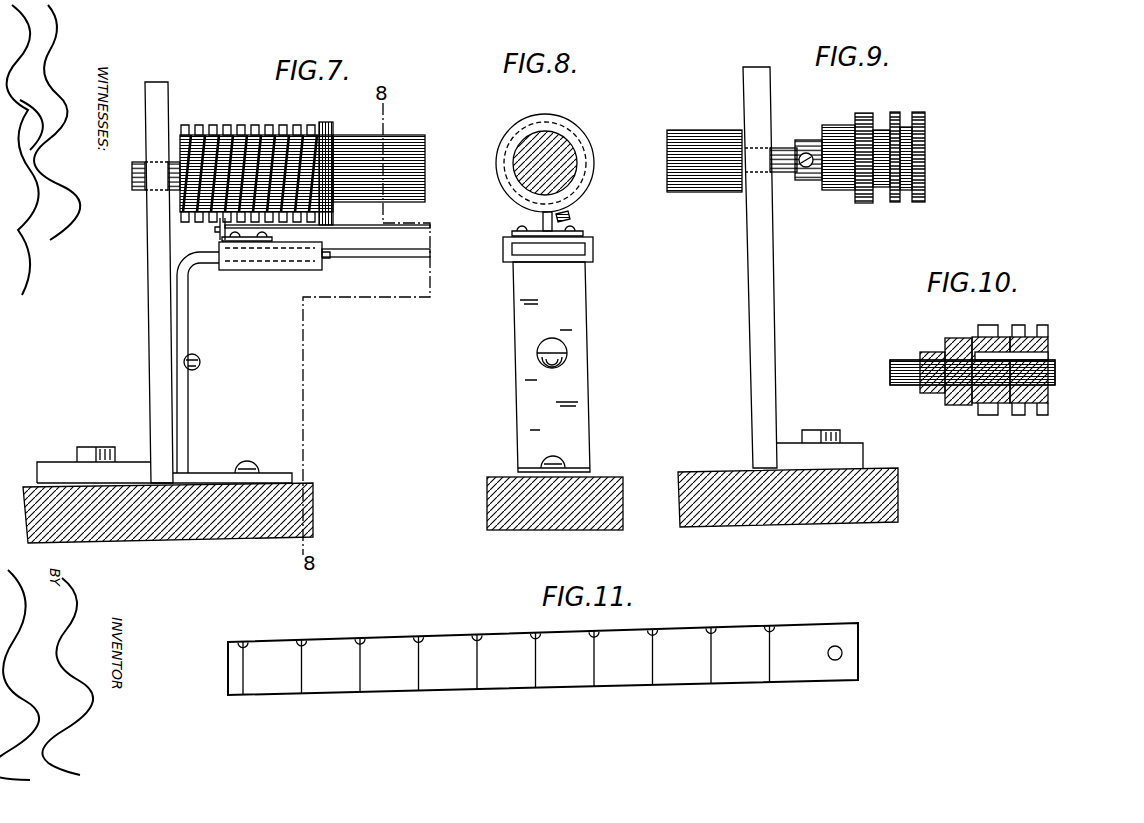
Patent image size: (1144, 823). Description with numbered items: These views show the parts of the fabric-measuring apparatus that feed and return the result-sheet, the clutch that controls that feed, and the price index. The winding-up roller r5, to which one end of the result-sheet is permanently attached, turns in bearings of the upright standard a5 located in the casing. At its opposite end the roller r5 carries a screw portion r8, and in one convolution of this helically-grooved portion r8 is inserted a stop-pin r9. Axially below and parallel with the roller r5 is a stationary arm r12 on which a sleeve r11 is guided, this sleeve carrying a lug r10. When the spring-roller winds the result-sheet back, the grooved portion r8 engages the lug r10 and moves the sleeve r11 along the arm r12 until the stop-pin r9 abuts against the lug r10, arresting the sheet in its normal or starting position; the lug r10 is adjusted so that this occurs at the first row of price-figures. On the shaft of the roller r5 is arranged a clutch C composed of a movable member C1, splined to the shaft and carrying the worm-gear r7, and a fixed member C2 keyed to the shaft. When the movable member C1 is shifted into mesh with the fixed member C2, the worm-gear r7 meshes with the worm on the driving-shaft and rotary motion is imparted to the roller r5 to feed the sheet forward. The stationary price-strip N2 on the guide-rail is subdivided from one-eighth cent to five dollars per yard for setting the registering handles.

In FIG. 7, the winding-up roller r5 is at (398, 150).
In FIG. 8, the winding-up roller r5 is at (557, 166).
In FIG. 9, the winding-up roller r5 is at (704, 145).
In FIG. 7, the screw portion r8 is at (268, 125).
In FIG. 8, the screw portion r8 is at (546, 116).
In FIG. 7, the stop-pin r9 is at (327, 224).
In FIG. 8, the stop-pin r9 is at (570, 216).
In FIG. 7, the lug r10 is at (220, 240).
In FIG. 8, the lug r10 is at (543, 223).
In FIG. 7, the sleeve r11 is at (261, 264).
In FIG. 8, the sleeve r11 is at (593, 248).
In FIG. 7, the stationary arm r12 is at (373, 250).
In FIG. 8, the stationary arm r12 is at (527, 248).
In FIG. 7, the upright standard a5 is at (157, 333).
In FIG. 9, the upright standard a5 is at (763, 345).
In FIG. 9, the fixed member C2 is at (825, 149).
In FIG. 10, the fixed member C2 is at (958, 340).
In FIG. 9, the clutch C is at (875, 143).
In FIG. 10, the clutch C is at (991, 349).
In FIG. 9, the movable member C1 is at (911, 142).
In FIG. 10, the movable member C1 is at (1025, 335).
In FIG. 9, the worm-gear r7 is at (862, 196).
In FIG. 10, the worm-gear r7 is at (990, 412).
In FIG. 11, the price-strip N2 is at (783, 638).